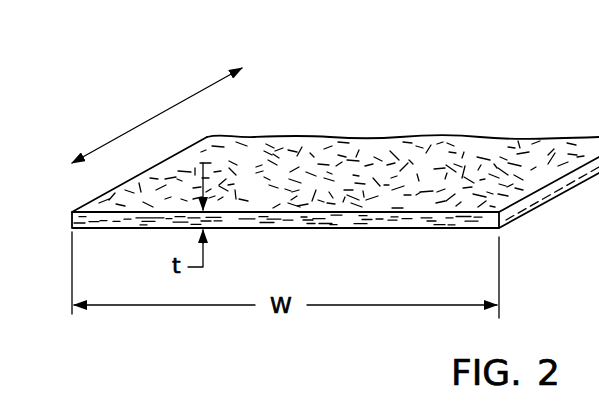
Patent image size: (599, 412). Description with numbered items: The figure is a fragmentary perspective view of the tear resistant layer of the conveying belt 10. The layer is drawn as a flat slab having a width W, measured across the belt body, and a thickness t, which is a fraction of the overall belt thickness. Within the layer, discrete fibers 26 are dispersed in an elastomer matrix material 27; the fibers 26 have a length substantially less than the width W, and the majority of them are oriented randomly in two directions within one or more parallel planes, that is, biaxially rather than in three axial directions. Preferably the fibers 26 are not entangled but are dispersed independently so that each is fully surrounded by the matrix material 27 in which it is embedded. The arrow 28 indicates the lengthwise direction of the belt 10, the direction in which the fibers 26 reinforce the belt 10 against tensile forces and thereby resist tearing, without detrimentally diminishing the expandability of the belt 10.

The conveying belt 10 is at (297, 66).
The discrete fibers 26 is at (427, 158).
The elastomer matrix material 27 is at (467, 145).
The arrow 28 is at (155, 117).